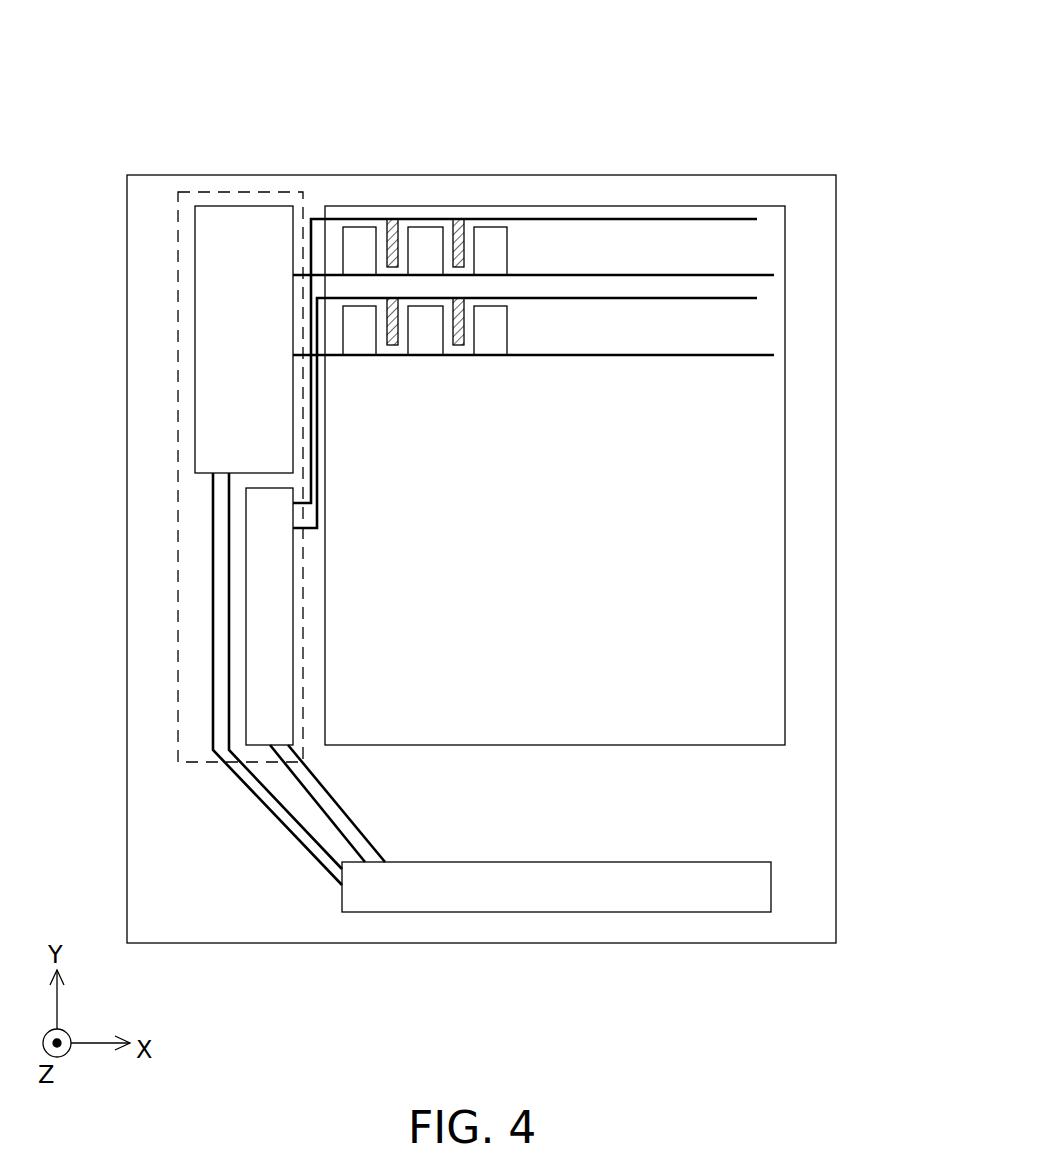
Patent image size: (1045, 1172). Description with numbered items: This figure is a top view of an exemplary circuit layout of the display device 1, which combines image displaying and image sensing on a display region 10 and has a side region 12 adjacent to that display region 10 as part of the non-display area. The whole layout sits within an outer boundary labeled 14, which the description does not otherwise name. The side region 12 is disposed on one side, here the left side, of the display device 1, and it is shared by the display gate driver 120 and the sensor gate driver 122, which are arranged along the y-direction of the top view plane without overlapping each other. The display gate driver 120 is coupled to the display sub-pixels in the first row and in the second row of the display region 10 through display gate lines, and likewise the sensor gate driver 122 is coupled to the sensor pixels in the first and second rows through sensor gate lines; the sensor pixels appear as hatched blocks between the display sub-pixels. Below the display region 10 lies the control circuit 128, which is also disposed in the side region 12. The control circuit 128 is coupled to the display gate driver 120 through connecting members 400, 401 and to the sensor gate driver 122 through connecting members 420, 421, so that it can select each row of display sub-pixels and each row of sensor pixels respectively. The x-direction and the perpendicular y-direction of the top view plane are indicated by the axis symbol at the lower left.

The display device 1 is at (656, 74).
The substrate 14 is at (771, 175).
The side region 12 is at (183, 762).
The display region 10 is at (683, 745).
The display gate driver 120 is at (267, 350).
The sensor gate driver 122 is at (293, 620).
The control circuit 128 is at (578, 900).
The connecting member 400 is at (267, 808).
The connecting member 401 is at (308, 837).
The connecting member 420 is at (330, 815).
The connecting member 421 is at (367, 840).